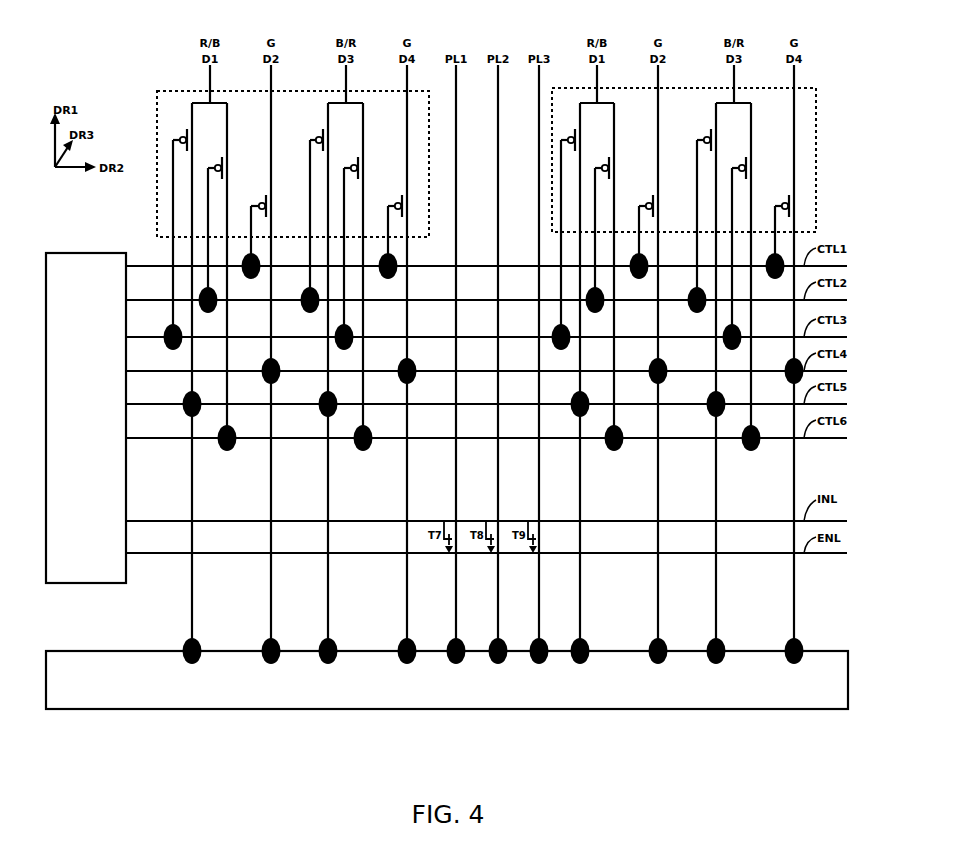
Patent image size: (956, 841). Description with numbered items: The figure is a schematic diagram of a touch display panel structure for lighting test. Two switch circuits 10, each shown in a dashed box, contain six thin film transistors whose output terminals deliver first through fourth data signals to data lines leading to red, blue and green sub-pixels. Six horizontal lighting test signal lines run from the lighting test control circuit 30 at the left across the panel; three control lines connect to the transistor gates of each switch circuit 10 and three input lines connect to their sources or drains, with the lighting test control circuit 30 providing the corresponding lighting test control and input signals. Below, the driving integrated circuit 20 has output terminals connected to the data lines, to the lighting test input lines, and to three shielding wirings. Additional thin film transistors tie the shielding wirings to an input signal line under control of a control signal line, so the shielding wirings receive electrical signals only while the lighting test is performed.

The switch circuit 10 is at (183, 90).
The driving integrated circuit 20 is at (91, 650).
The lighting test control circuit 30 is at (55, 252).